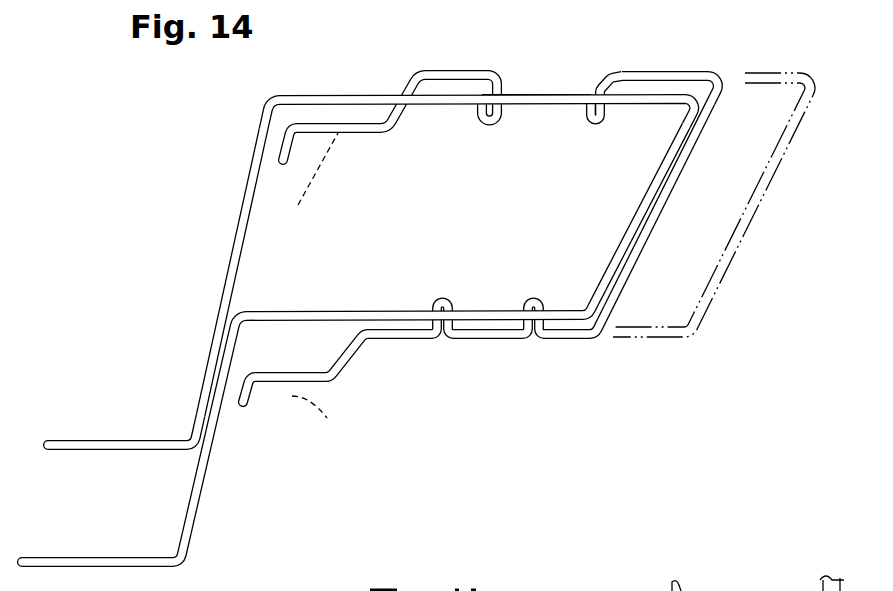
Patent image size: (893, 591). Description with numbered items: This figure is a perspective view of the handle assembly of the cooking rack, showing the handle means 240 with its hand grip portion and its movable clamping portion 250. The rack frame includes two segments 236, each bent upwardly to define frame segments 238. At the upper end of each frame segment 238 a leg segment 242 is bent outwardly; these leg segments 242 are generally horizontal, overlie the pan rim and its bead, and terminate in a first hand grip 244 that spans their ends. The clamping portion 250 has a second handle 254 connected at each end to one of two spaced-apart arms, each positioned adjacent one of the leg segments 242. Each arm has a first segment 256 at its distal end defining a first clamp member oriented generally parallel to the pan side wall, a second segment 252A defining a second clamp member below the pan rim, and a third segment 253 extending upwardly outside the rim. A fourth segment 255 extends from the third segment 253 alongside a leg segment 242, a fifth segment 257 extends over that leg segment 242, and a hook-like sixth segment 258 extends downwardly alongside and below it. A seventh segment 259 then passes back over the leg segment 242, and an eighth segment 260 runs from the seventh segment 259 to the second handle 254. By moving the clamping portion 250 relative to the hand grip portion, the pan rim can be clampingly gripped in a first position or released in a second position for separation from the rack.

The frame segment 236 is at (94, 440).
The frame segment 238 is at (223, 292).
The handle means 240 is at (612, 67).
The leg segment 242 is at (640, 103).
The first hand grip 244 is at (640, 210).
The clamping portion 250 is at (348, 349).
The second segment 252A is at (362, 138).
The third segment 253 is at (398, 111).
The second handle 254 is at (642, 232).
The fourth segment 255 is at (456, 70).
The first segment 256 is at (288, 158).
The fifth segment 257 is at (496, 89).
The sixth segment 258 is at (561, 92).
The seventh segment 259 is at (606, 80).
The eighth segment 260 is at (679, 70).